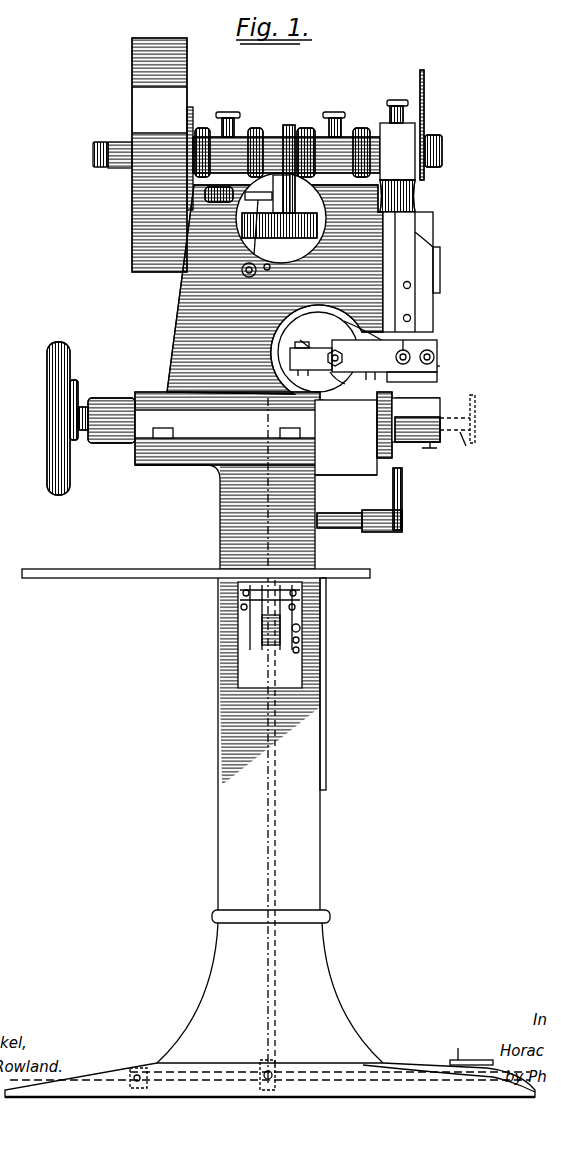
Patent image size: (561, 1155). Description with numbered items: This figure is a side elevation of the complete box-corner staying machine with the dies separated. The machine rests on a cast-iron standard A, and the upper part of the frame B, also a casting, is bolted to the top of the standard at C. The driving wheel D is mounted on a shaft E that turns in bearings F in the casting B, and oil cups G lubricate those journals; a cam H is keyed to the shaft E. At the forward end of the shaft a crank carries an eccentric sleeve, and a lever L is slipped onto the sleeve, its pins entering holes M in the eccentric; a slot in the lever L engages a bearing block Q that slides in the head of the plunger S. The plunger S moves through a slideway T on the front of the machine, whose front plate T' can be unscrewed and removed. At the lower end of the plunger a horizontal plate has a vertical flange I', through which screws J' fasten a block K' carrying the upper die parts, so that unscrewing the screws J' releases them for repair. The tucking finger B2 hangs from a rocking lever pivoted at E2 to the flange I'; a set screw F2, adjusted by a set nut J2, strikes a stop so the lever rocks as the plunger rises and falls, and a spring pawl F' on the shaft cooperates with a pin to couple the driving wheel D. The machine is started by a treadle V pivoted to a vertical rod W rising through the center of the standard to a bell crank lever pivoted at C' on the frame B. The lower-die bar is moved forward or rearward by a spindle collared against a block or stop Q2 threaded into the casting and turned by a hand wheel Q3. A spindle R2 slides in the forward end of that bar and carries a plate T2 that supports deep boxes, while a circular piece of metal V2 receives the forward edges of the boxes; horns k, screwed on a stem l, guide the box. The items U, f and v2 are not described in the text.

The standard A is at (202, 764).
The upper part of the frame B is at (259, 324).
The tucking finger B2 is at (347, 384).
The bolts C is at (226, 422).
The pivot of bell crank lever C' is at (353, 330).
The driving wheel D is at (162, 155).
The shaft E is at (93, 150).
The pivot of rocking lever E2 is at (343, 358).
The bearings F is at (286, 152).
The spring pawl F' is at (286, 174).
The set screw F2 is at (312, 331).
The oil cups G is at (336, 112).
The cam H is at (289, 125).
The vertical flange I' is at (396, 359).
The screws J' is at (431, 335).
The set nut J2 is at (311, 355).
The block K' is at (469, 356).
The lever L is at (424, 110).
The holes M is at (372, 532).
The bearing block Q is at (387, 111).
The block or stop Q2 is at (121, 392).
The hand wheel Q3 is at (47, 440).
The spindle R2 is at (472, 449).
The plunger S is at (438, 198).
The slideway T is at (424, 272).
The front plate T' is at (454, 270).
The plate T2 is at (467, 419).
The knurled nut U is at (443, 151).
The treadle V is at (270, 1066).
The circular piece of metal V2 is at (377, 428).
The vertical rod W is at (275, 984).
The pawl f is at (279, 215).
The horns k is at (402, 500).
The stem l is at (340, 513).
The set screw v2 is at (429, 459).